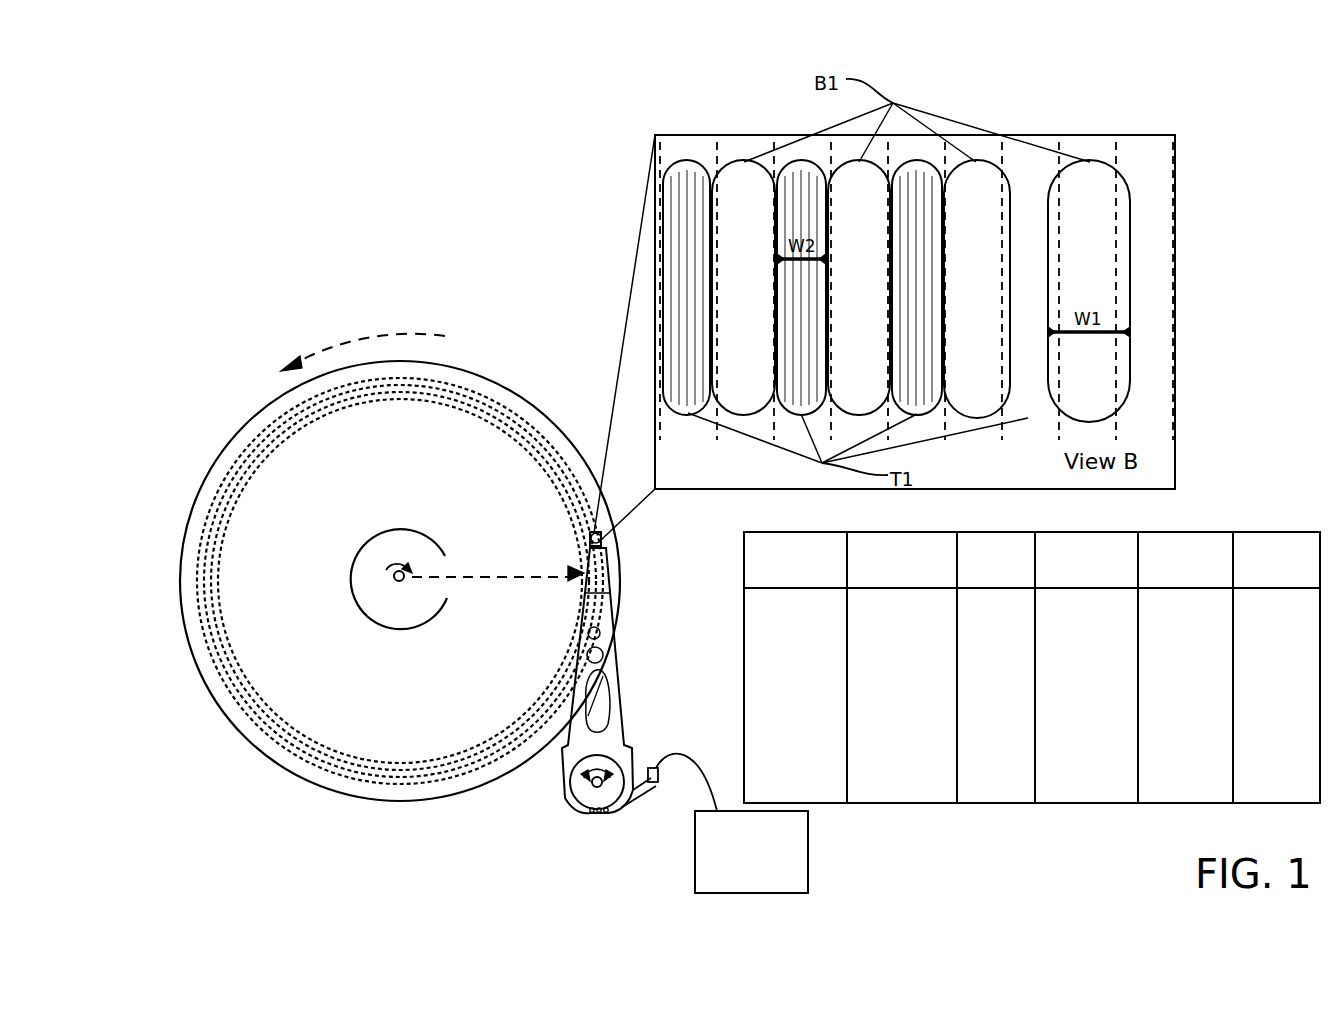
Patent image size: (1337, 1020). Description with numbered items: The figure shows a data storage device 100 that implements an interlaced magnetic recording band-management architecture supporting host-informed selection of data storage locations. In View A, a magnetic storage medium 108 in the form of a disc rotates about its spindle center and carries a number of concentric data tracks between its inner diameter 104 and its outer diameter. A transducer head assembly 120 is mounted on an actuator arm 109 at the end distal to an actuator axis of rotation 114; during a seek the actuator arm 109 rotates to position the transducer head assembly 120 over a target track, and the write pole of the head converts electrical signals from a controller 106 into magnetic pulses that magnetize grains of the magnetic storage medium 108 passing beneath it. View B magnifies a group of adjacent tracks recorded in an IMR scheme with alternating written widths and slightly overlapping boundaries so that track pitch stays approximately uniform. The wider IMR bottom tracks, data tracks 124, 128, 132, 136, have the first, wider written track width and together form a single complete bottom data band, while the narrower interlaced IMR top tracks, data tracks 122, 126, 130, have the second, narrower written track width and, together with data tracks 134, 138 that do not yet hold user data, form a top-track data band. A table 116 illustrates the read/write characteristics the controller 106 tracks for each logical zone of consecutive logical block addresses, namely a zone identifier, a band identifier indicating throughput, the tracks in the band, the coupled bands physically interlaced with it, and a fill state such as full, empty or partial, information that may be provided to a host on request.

The data storage device 100 is at (305, 148).
The inner diameter 104 is at (350, 588).
The controller 106 is at (736, 882).
The magnetic storage medium 108 is at (268, 762).
The actuator arm 109 is at (622, 662).
The actuator axis of rotation 114 is at (597, 782).
The table 116 is at (744, 548).
The transducer head assembly 120 is at (603, 540).
The data track 122 is at (705, 401).
The data track 124 is at (759, 401).
The data track 126 is at (819, 401).
The data track 128 is at (875, 401).
The data track 130 is at (935, 401).
The data track 132 is at (991, 401).
The data track 134 is at (1045, 401).
The data track 136 is at (1109, 401).
The data track 138 is at (1161, 401).